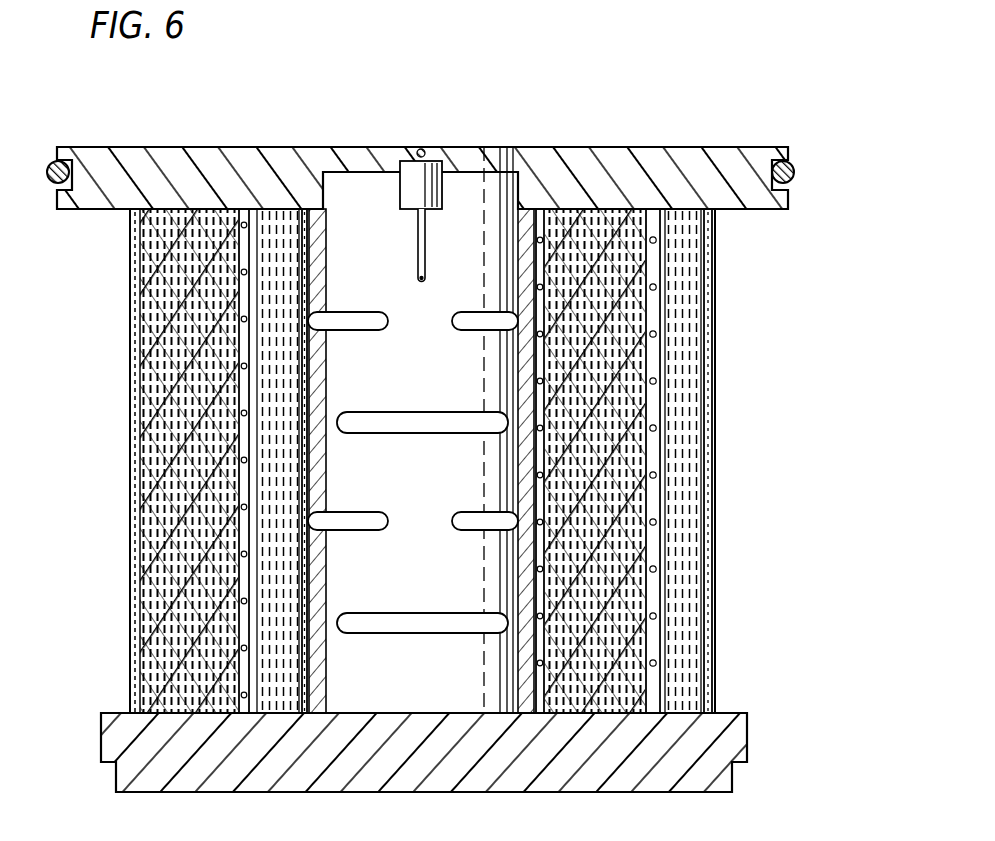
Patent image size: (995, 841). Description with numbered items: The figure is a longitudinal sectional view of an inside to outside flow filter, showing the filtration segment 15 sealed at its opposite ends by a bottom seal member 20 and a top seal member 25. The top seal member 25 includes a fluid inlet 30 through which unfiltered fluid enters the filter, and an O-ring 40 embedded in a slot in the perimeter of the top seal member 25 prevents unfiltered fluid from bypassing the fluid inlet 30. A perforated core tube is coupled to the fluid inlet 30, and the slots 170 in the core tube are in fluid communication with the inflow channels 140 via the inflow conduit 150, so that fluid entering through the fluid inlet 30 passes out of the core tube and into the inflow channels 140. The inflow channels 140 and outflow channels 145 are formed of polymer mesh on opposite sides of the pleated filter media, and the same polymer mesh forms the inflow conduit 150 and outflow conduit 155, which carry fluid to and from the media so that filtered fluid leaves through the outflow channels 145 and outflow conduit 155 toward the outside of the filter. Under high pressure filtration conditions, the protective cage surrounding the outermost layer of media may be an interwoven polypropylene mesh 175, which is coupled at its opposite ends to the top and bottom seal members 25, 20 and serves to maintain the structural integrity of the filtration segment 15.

The filtration segment 15 is at (425, 397).
The bottom seal member 20 is at (748, 740).
The top seal member 25 is at (723, 147).
The fluid inlet 30 is at (484, 397).
The O-ring 40 is at (797, 172).
The inflow channels 140 is at (650, 210).
The outflow channels 145 is at (248, 212).
The inflow conduit 150 is at (612, 548).
The outflow conduit 155 is at (172, 311).
The slots 170 is at (370, 423).
The interwoven polypropylene mesh 175 is at (713, 288).